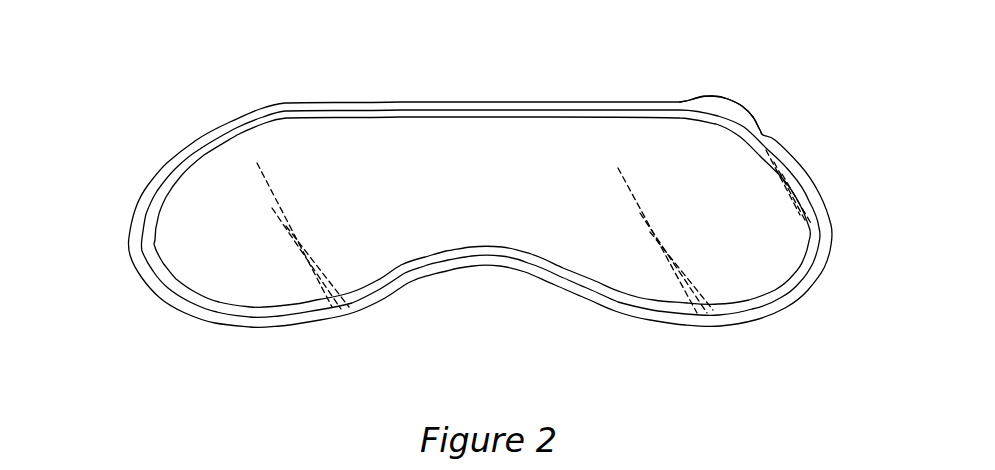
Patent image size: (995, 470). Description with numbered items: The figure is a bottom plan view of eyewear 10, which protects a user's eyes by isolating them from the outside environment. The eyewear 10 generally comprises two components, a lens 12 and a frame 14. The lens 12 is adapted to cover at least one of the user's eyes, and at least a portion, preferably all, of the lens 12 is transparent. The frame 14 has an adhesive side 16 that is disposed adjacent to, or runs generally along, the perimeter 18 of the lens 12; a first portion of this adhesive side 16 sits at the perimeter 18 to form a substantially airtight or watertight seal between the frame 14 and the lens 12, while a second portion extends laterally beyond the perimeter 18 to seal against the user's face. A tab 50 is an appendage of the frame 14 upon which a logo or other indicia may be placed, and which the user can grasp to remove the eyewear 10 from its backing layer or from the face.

The eyewear 10 is at (456, 235).
The lens 12 is at (400, 143).
The frame 14 is at (160, 115).
The adhesive side 16 is at (227, 128).
The perimeter 18 is at (317, 313).
The tab 50 is at (725, 112).